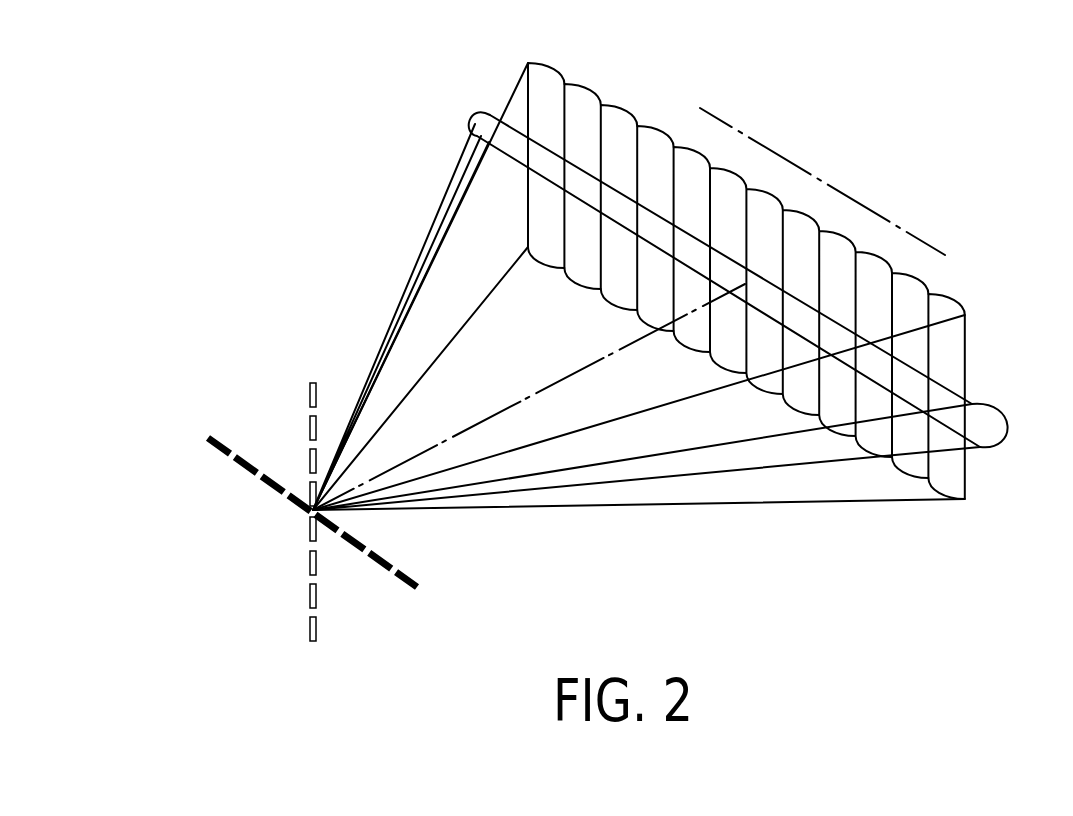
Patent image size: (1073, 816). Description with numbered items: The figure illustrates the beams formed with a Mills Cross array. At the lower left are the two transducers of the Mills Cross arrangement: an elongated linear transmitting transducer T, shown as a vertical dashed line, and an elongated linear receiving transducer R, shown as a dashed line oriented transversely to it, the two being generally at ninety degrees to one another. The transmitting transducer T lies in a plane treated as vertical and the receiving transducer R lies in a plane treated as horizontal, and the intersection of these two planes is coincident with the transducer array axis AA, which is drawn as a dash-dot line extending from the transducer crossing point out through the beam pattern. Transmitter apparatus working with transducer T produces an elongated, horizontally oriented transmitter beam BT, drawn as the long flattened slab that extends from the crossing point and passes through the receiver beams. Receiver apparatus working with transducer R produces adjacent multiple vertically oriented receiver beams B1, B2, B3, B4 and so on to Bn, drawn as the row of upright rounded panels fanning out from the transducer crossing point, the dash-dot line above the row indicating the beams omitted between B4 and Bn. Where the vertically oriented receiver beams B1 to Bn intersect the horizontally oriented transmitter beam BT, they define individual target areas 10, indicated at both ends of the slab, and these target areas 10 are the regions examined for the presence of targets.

The target areas 10 is at (620, 203).
The receiver beam B1 is at (548, 64).
The receiver beam B2 is at (588, 89).
The receiver beam B3 is at (628, 109).
The receiver beam B4 is at (660, 130).
The receiver beam Bn is at (950, 297).
The transmitter beam BT is at (985, 424).
The transducer array axis AA is at (585, 366).
The transmitting transducer T is at (313, 493).
The receiving transducer R is at (301, 504).